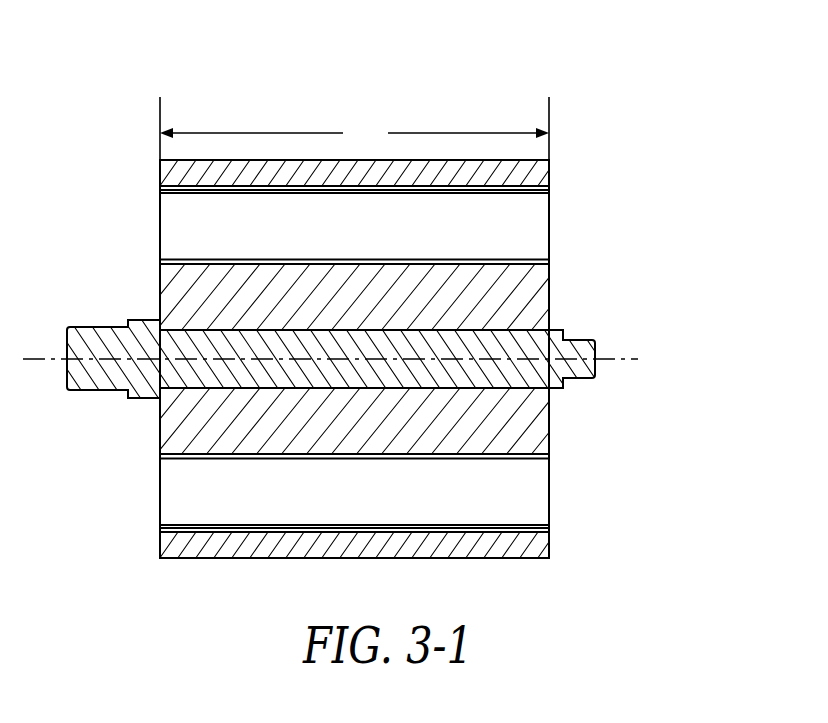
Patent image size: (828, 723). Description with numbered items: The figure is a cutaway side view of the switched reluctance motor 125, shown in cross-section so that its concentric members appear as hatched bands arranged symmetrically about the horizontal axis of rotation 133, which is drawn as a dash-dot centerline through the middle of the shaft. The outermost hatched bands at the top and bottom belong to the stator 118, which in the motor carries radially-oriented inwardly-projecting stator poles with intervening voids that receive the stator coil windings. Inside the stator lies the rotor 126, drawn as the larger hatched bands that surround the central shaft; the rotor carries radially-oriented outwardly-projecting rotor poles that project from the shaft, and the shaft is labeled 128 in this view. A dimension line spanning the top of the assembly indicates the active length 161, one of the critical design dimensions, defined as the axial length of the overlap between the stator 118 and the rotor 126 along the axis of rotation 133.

The switched reluctance motor 125 is at (188, 75).
The stator 118 is at (160, 173).
The rotor 126 is at (549, 278).
The shaft 128 is at (549, 331).
The axis of rotation 133 is at (611, 358).
The active length 161 is at (388, 146).